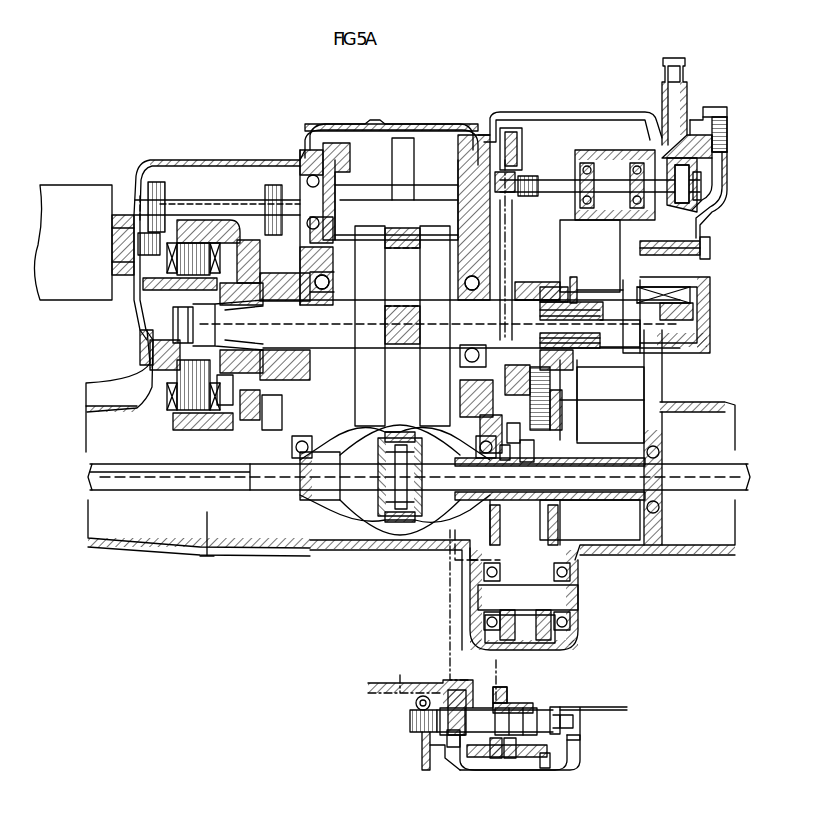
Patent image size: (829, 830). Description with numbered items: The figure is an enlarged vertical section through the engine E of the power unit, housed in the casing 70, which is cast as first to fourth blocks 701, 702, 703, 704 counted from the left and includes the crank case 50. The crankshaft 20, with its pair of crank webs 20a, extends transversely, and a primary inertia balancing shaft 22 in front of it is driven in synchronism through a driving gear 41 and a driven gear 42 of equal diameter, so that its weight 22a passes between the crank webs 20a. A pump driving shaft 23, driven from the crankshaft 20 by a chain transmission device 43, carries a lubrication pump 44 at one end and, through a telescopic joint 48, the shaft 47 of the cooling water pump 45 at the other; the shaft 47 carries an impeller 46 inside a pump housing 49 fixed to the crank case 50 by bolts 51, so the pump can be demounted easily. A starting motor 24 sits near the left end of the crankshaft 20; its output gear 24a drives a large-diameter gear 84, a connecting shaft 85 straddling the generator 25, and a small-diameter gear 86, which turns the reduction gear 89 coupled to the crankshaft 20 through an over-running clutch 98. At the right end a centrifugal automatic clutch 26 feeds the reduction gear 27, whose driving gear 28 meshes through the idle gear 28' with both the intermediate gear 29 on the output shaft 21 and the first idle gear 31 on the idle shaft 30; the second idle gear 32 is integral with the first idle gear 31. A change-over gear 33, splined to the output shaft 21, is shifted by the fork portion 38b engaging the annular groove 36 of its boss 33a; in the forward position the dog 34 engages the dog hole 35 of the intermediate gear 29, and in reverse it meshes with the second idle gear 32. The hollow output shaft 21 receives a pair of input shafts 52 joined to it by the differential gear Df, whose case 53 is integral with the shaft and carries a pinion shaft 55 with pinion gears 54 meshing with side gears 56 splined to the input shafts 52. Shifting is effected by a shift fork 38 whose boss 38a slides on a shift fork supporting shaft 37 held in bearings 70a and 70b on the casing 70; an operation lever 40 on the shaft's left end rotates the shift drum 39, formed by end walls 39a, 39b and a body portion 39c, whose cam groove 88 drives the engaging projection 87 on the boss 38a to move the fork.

The casing 70 is at (357, 128).
The first block 701 is at (138, 550).
The second block 702 is at (285, 555).
The third block 703 is at (430, 551).
The fourth block 704 is at (695, 556).
The bearing 70a is at (450, 747).
The bearing 70b is at (567, 740).
The crank case 50 is at (440, 131).
The engine E is at (590, 113).
The cooling water pump 45 is at (728, 132).
The pump housing 49 is at (727, 170).
The impeller 46 is at (692, 210).
The shaft 47 is at (600, 172).
The telescopic joint 48 is at (522, 192).
The bolts 51 is at (710, 249).
The chain transmission device 43 is at (515, 148).
The lubrication pump 44 is at (460, 166).
The pump driving shaft 23 is at (512, 173).
The centrifugal automatic clutch 26 is at (596, 262).
The reduction gear 27 is at (532, 272).
The driving gear 28 is at (569, 278).
The idle gear 28' is at (531, 397).
The starting motor 24 is at (68, 192).
The output gear 24a is at (138, 246).
The large-diameter gear 84 is at (165, 190).
The connecting shaft 85 is at (200, 204).
The small-diameter gear 86 is at (268, 192).
The generator 25 is at (173, 418).
The crankshaft 20 is at (304, 334).
The crank webs 20a is at (315, 447).
The primary inertia balancing shaft 22 is at (378, 200).
The weight 22a is at (392, 151).
The driving gear 41 is at (340, 283).
The driven gear 42 is at (340, 256).
The change-over gear 33 is at (513, 423).
The boss 33a is at (495, 458).
The dog 34 is at (530, 450).
The dog hole 35 is at (502, 437).
The annular groove 36 is at (502, 455).
The output shaft 21 is at (605, 500).
The intermediate gear 29 is at (540, 512).
The idle shaft 30 is at (560, 583).
The first idle gear 31 is at (535, 614).
The second idle gear 32 is at (520, 629).
The input shafts 52 is at (142, 478).
The differential gear Df is at (380, 527).
The case 53 is at (380, 500).
The pinion gears 54 is at (383, 434).
The pinion shaft 55 is at (398, 438).
The side gears 56 is at (380, 474).
The fork portion 38b is at (455, 530).
The over-running clutch 98 is at (258, 417).
The reduction gear 89 is at (272, 432).
The operation lever 40 is at (422, 750).
The shift fork 38 is at (488, 692).
The boss 38a is at (515, 704).
The shift fork supporting shaft 37 is at (540, 713).
The shift drum 39 is at (462, 755).
The end wall 39a is at (466, 690).
The end wall 39b is at (558, 708).
The body portion 39c is at (543, 768).
The engaging projection 87 is at (500, 757).
The cam groove 88 is at (512, 757).